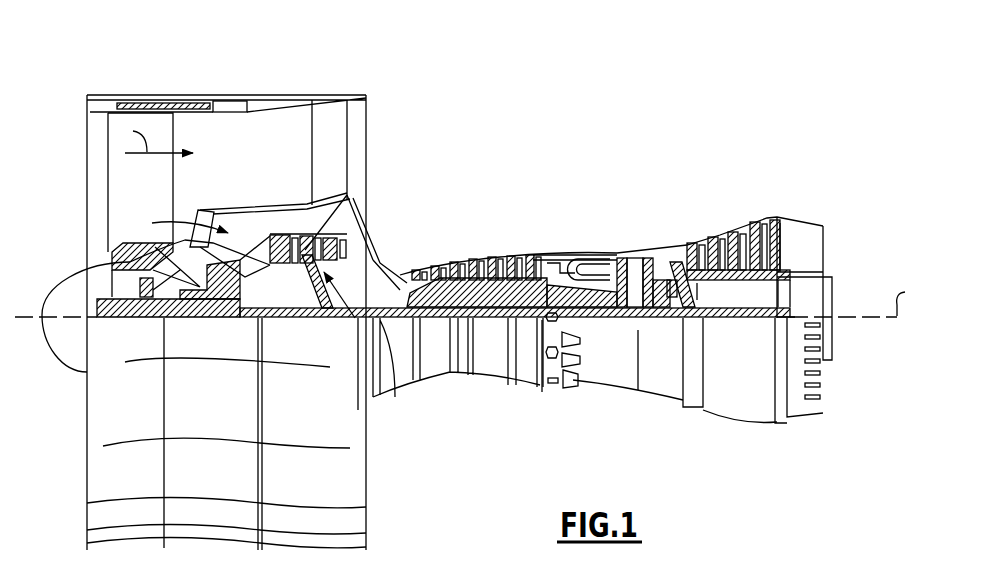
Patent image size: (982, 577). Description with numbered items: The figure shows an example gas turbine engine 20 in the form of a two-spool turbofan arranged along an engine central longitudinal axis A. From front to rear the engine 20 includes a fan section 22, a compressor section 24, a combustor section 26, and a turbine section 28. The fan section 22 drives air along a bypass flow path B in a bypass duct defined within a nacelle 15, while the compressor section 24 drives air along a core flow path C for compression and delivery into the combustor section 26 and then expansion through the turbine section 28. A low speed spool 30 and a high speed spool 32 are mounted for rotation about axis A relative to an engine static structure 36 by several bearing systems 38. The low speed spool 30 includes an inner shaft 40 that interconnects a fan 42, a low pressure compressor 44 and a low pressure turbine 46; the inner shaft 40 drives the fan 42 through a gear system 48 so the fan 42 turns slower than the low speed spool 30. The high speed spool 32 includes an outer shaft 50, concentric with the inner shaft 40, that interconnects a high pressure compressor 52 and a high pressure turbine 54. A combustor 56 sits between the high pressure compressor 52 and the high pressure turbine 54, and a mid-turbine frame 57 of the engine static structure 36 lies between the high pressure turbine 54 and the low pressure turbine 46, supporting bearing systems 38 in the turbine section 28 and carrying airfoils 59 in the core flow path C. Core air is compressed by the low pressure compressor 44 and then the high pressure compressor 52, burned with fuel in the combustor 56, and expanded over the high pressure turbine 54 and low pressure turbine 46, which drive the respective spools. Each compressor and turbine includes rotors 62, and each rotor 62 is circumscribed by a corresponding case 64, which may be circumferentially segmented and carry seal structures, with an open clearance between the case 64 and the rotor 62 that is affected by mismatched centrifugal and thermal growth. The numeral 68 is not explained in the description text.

The nacelle 15 is at (229, 98).
The gas turbine engine 20 is at (588, 133).
The fan section 22 is at (174, 91).
The compressor section 24 is at (408, 237).
The combustor section 26 is at (574, 231).
The turbine section 28 is at (717, 181).
The low speed spool 30 is at (493, 330).
The high speed spool 32 is at (533, 263).
The engine static structure 36 is at (525, 391).
The bearing systems 38 is at (338, 318).
The inner shaft 40 is at (383, 322).
The fan 42 is at (156, 196).
The low pressure compressor 44 is at (320, 223).
The low pressure turbine 46 is at (745, 222).
The gear system 48 is at (232, 318).
The outer shaft 50 is at (590, 316).
The high pressure compressor 52 is at (472, 263).
The high pressure turbine 54 is at (633, 256).
The combustor 56 is at (580, 267).
The mid-turbine frame 57 is at (673, 239).
The airfoils 59 is at (697, 300).
The rotors 62 is at (706, 281).
The case 64 is at (307, 235).
The vanes 68 is at (338, 198).